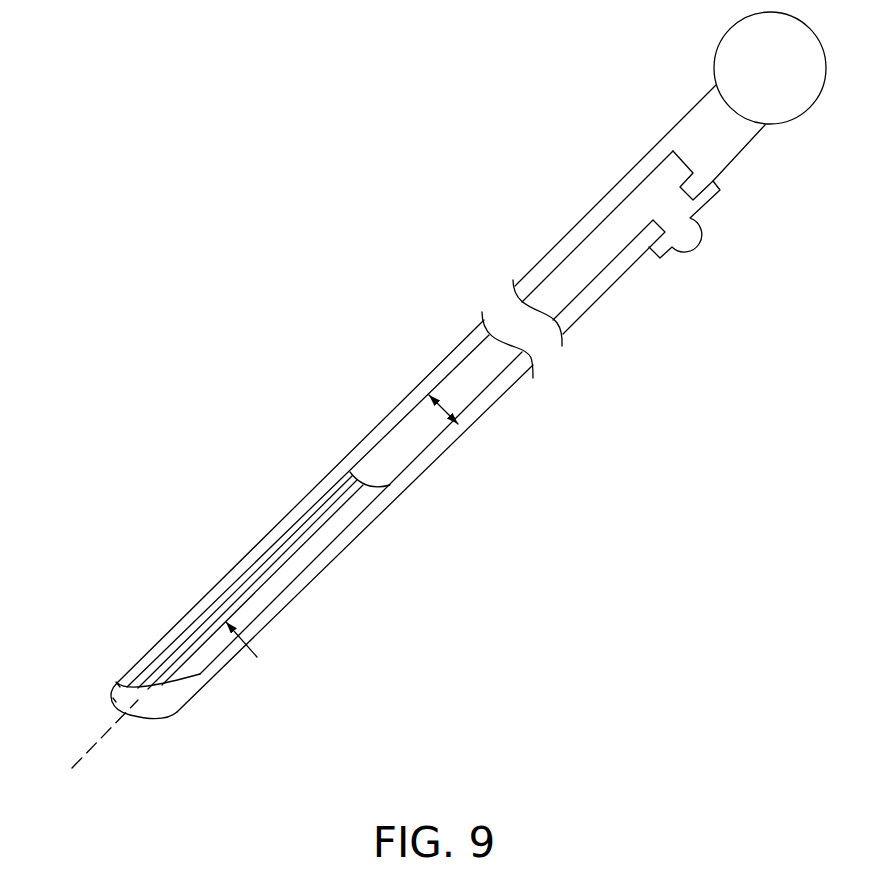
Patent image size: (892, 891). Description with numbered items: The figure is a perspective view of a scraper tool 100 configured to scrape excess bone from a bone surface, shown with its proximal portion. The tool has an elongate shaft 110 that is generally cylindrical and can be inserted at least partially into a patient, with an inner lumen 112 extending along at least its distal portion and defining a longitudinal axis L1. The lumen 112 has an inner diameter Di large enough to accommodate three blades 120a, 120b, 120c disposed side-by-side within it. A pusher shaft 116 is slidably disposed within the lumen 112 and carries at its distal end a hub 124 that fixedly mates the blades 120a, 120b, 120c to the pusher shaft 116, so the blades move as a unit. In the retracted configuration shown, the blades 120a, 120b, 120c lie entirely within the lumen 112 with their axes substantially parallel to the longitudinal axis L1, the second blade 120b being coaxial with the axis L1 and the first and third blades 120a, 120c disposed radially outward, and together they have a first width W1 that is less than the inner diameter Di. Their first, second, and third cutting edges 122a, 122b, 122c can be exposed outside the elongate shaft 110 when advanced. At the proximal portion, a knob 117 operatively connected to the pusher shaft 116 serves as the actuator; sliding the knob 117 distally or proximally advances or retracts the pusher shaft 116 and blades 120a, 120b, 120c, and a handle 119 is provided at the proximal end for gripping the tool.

The scraper tool 100 is at (407, 143).
The elongate shaft 110 is at (360, 440).
The inner lumen 112 is at (167, 716).
The pusher shaft 116 is at (491, 381).
The knob 117 is at (661, 257).
The handle 119 is at (716, 58).
The first blade 120a is at (262, 553).
The second blade 120b is at (306, 522).
The third blade 120c is at (318, 558).
The first cutting edge 122a is at (116, 682).
The second cutting edge 122b is at (114, 701).
The third cutting edge 122c is at (200, 677).
The hub 124 is at (350, 472).
The inner diameter Di is at (445, 439).
The first width W1 is at (199, 598).
The longitudinal axis L1 is at (91, 747).